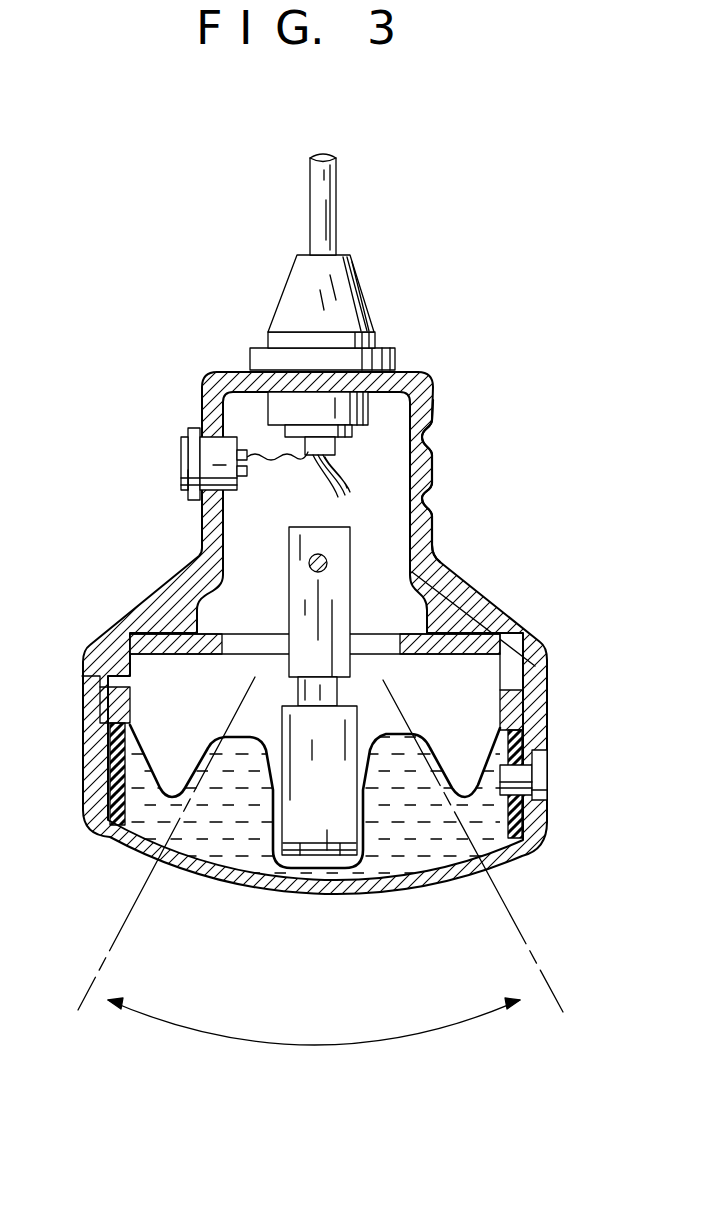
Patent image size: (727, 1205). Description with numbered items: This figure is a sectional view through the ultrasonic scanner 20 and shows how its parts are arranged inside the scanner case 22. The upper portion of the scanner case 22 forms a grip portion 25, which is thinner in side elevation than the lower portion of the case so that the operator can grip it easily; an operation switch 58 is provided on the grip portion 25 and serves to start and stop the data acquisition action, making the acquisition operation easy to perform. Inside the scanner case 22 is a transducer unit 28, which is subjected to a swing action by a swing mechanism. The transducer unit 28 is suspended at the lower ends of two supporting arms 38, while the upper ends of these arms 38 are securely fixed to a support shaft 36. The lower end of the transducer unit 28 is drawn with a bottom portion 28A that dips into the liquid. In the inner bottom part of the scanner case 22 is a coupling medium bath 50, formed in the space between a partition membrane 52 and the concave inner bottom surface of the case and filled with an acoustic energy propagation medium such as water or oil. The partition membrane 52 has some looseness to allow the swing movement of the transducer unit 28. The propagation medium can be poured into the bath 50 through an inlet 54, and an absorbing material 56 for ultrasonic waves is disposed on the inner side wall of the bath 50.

The ultrasonic scanner 20 is at (208, 270).
The scanner case 22 is at (215, 371).
The grip portion 25 is at (434, 472).
The transducer unit 28 is at (345, 736).
The weight bottom portion 28A is at (320, 846).
The support shaft 36 is at (323, 557).
The supporting arms 38 is at (340, 612).
The coupling medium bath 50 is at (435, 848).
The partition membrane 52 is at (140, 857).
The inlet 54 is at (540, 780).
The absorbing material 56 is at (538, 840).
The operation switch 58 is at (184, 437).